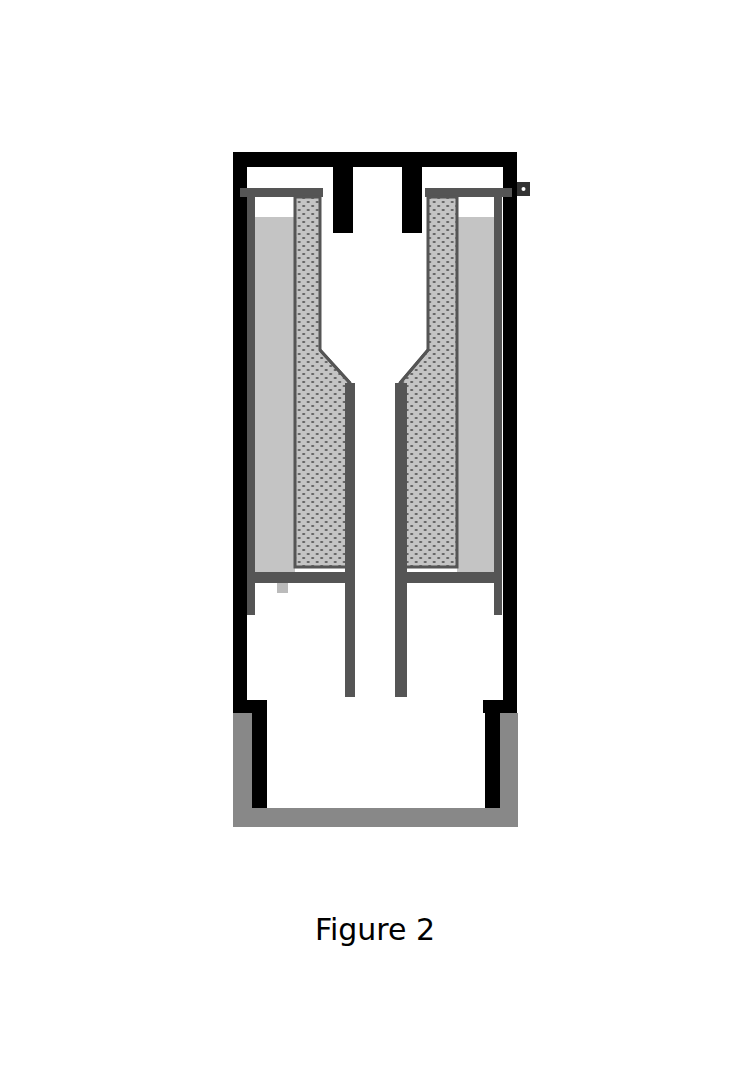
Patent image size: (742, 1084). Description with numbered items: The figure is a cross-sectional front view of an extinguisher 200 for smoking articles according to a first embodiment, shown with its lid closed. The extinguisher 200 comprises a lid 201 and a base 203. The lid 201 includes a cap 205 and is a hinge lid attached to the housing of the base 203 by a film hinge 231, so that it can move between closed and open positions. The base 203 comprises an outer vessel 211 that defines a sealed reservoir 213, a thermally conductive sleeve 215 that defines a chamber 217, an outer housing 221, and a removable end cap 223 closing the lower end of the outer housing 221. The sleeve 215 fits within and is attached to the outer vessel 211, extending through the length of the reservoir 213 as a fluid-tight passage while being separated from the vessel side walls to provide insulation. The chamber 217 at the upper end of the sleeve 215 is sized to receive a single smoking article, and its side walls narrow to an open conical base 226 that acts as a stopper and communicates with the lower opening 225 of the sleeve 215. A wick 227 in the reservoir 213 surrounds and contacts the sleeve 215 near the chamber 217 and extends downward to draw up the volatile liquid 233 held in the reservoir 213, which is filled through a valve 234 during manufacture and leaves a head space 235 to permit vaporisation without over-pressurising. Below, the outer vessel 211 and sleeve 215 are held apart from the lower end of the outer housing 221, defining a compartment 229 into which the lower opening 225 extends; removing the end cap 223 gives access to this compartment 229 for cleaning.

The extinguisher 200 is at (160, 175).
The lid 201 is at (522, 157).
The base 203 is at (558, 485).
The cap 205 is at (355, 152).
The outer vessel 211 is at (502, 542).
The sealed reservoir 213 is at (477, 395).
The thermally conductive sleeve 215 is at (430, 331).
The chamber 217 is at (348, 305).
The outer housing 221 is at (517, 677).
The removable end cap 223 is at (512, 792).
The lower opening 225 is at (373, 697).
The conical base 226 is at (333, 367).
The wick 227 is at (313, 472).
The compartment 229 is at (402, 772).
The film hinge 231 is at (530, 195).
The volatile liquid 233 is at (270, 307).
The valve 234 is at (273, 590).
The head space 235 is at (273, 210).